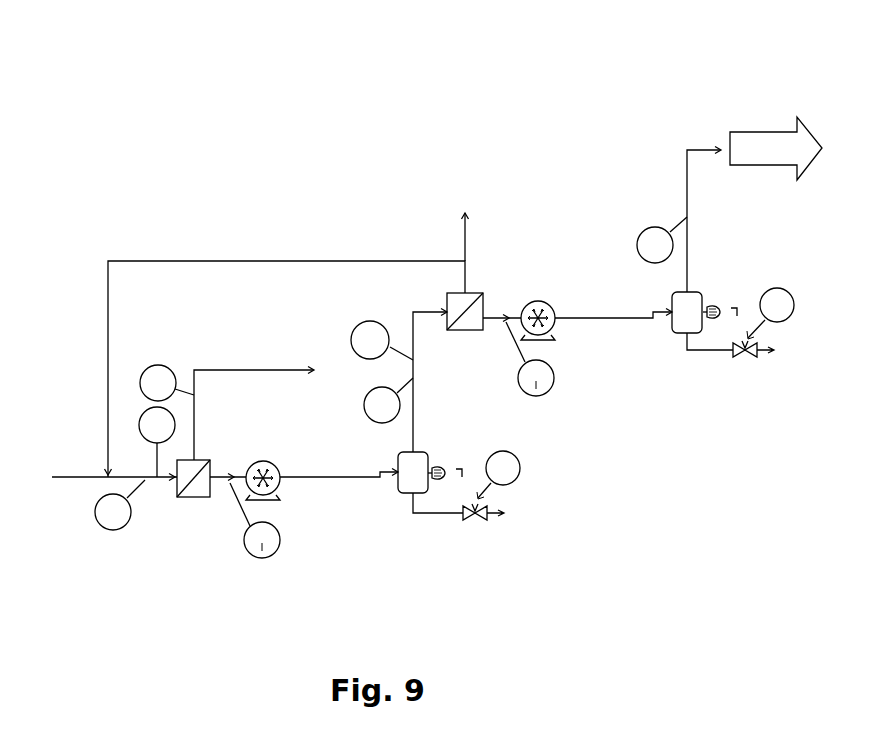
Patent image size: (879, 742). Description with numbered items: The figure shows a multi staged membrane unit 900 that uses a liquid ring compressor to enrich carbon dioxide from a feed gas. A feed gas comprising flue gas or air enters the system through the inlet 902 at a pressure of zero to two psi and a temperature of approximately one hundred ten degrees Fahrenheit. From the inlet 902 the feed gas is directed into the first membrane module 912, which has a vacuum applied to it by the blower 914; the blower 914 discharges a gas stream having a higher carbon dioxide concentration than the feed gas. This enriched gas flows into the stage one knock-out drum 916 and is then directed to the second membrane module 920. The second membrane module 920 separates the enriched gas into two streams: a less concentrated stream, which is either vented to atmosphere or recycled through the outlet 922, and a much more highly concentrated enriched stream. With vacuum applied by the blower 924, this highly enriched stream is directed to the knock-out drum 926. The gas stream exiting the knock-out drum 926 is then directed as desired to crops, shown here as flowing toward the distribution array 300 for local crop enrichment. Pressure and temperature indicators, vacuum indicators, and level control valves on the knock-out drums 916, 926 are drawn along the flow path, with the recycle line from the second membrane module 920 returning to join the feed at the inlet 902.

The multi staged membrane unit 900 is at (422, 288).
The inlet 902 is at (75, 487).
The first membrane module 912 is at (190, 500).
The blower 914 is at (290, 492).
The stage one knock-out drum 916 is at (402, 498).
The second membrane module 920 is at (483, 292).
The outlet 922 is at (473, 262).
The blower 924 is at (563, 332).
The knock-out drum 926 is at (724, 302).
The distribution array 300 is at (776, 148).